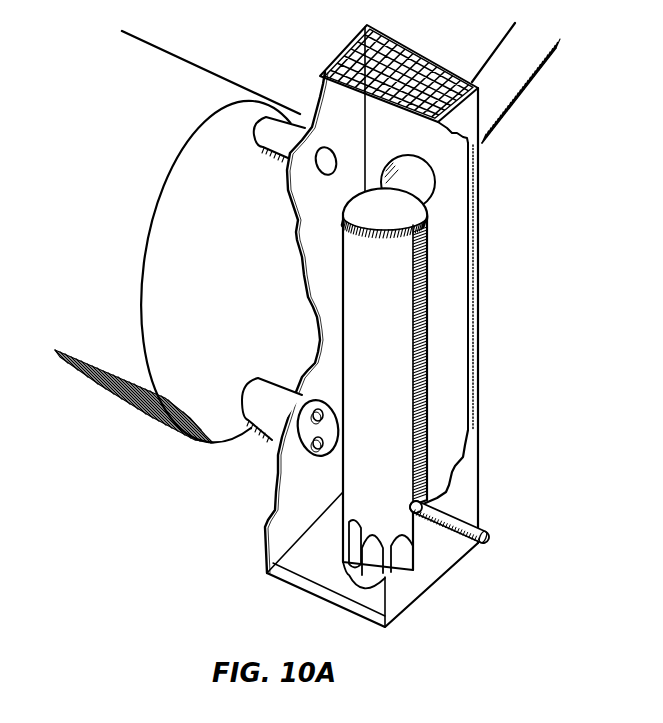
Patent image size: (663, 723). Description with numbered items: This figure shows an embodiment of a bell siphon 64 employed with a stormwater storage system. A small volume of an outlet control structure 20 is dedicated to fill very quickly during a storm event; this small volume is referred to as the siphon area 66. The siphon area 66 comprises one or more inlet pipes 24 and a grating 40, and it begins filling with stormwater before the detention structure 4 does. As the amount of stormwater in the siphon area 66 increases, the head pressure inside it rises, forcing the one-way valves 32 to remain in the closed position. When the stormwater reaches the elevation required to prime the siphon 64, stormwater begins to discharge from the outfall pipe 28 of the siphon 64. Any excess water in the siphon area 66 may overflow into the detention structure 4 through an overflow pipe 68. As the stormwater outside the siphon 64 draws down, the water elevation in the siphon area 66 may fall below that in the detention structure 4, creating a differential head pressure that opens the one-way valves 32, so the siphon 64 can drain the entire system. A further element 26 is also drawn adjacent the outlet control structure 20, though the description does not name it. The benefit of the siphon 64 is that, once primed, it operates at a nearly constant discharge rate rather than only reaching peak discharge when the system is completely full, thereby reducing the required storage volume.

The detention structure 4 is at (170, 66).
The outlet control structure 20 is at (460, 265).
The inlet pipe 24 is at (500, 92).
The post 26 is at (252, 402).
The outfall pipe 28 is at (462, 512).
The one-way valves 32 is at (300, 430).
The grating 40 is at (400, 58).
The bell siphon 64 is at (387, 338).
The siphon area 66 is at (438, 312).
The overflow pipe 68 is at (277, 133).